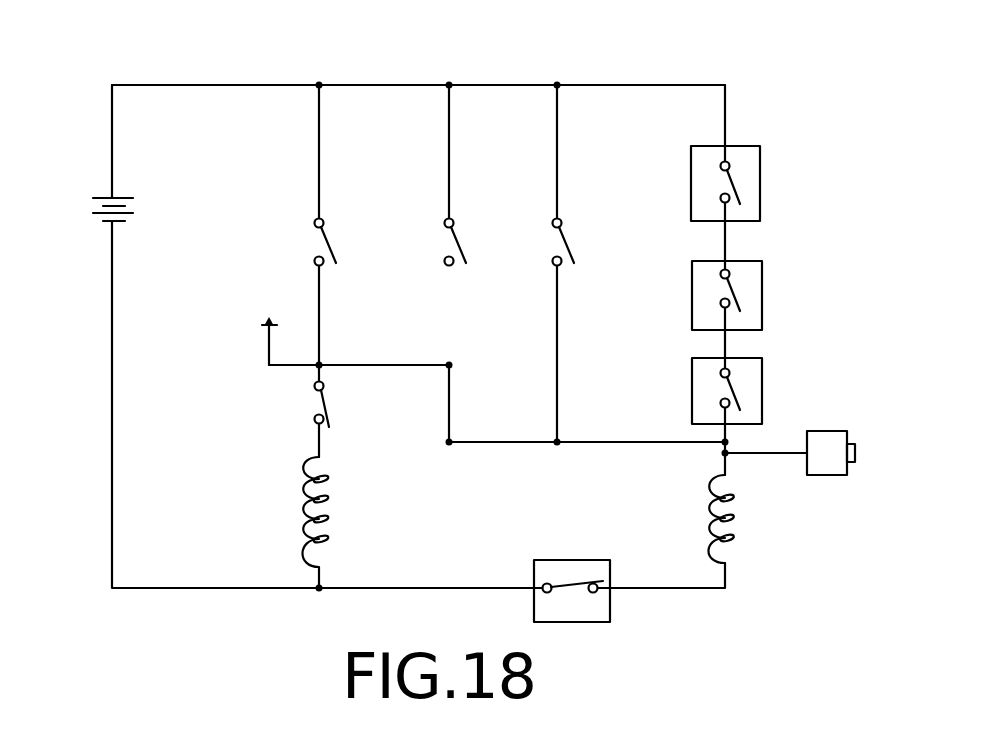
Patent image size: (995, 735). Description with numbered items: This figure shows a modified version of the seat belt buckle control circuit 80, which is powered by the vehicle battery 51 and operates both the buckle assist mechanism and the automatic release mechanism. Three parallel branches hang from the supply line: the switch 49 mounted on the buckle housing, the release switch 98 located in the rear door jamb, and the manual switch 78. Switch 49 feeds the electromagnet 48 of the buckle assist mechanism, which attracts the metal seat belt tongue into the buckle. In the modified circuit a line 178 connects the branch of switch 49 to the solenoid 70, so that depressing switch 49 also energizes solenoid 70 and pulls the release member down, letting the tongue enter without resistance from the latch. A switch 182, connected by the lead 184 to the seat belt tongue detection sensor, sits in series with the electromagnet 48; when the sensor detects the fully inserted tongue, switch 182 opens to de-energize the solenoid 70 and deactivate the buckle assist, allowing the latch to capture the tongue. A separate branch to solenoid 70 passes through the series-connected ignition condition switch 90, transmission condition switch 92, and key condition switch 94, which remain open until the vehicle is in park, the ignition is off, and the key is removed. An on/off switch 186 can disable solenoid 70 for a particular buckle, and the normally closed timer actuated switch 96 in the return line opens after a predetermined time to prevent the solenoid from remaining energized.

The circuit 80 is at (613, 72).
The battery 51 is at (93, 209).
The switch 49 is at (330, 240).
The release switch 98 is at (458, 240).
The switch 78 is at (573, 240).
The ignition condition switch 90 is at (737, 184).
The transmission condition switch 92 is at (735, 291).
The key condition switch 94 is at (737, 388).
The on/off switch 186 is at (830, 476).
The solenoid 70 is at (735, 526).
The electromagnet 48 is at (328, 513).
The timer actuated switch 96 is at (582, 622).
The switch 182 is at (335, 402).
The line 178 is at (388, 364).
The lead 184 is at (269, 340).